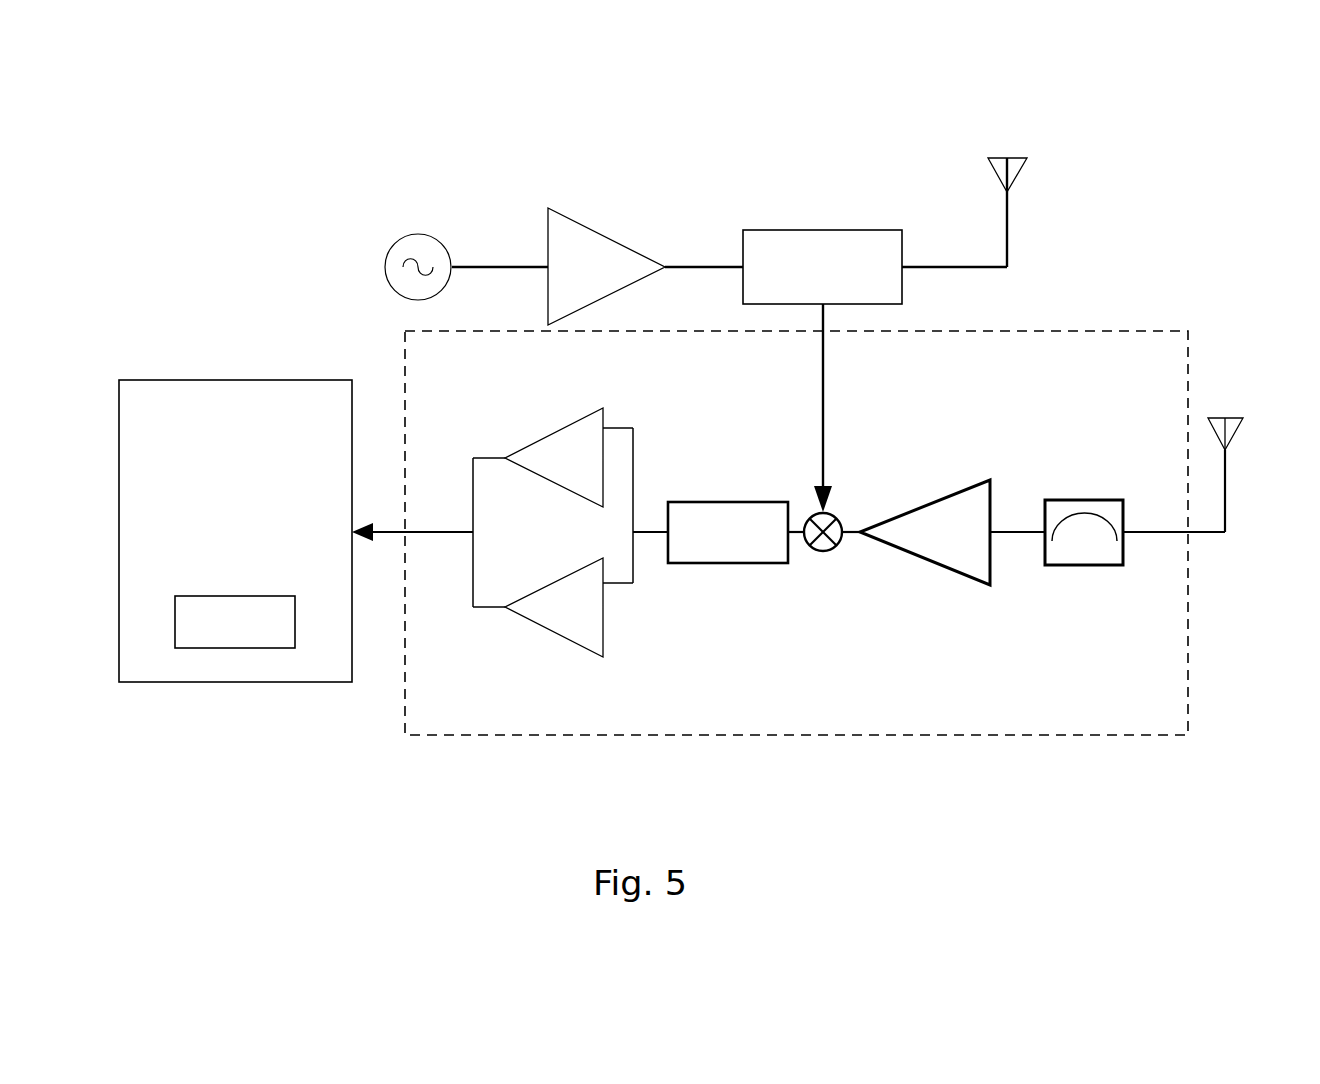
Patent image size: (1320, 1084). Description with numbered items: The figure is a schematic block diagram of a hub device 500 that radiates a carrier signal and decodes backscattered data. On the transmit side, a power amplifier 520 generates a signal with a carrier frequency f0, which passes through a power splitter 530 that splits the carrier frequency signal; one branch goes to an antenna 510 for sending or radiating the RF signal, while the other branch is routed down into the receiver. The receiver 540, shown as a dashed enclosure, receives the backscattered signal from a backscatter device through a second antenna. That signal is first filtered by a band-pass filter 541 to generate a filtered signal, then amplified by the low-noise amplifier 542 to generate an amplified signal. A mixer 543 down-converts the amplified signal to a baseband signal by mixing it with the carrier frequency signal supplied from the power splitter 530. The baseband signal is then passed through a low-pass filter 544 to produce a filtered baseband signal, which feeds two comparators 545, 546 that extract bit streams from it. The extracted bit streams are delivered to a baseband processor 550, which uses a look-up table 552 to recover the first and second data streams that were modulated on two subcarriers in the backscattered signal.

The hub device 500 is at (1222, 663).
The antenna 510 is at (1027, 160).
The power amplifier 520 is at (631, 262).
The power splitter 530 is at (823, 238).
The receiver 540 is at (796, 533).
The band-pass filter 541 is at (1088, 547).
The low-noise amplifier 542 is at (932, 555).
The mixer 543 is at (823, 553).
The low-pass filter 544 is at (737, 563).
The comparator 545 is at (555, 618).
The comparator 546 is at (542, 465).
The baseband processor 550 is at (208, 420).
The look-up table 552 is at (228, 642).